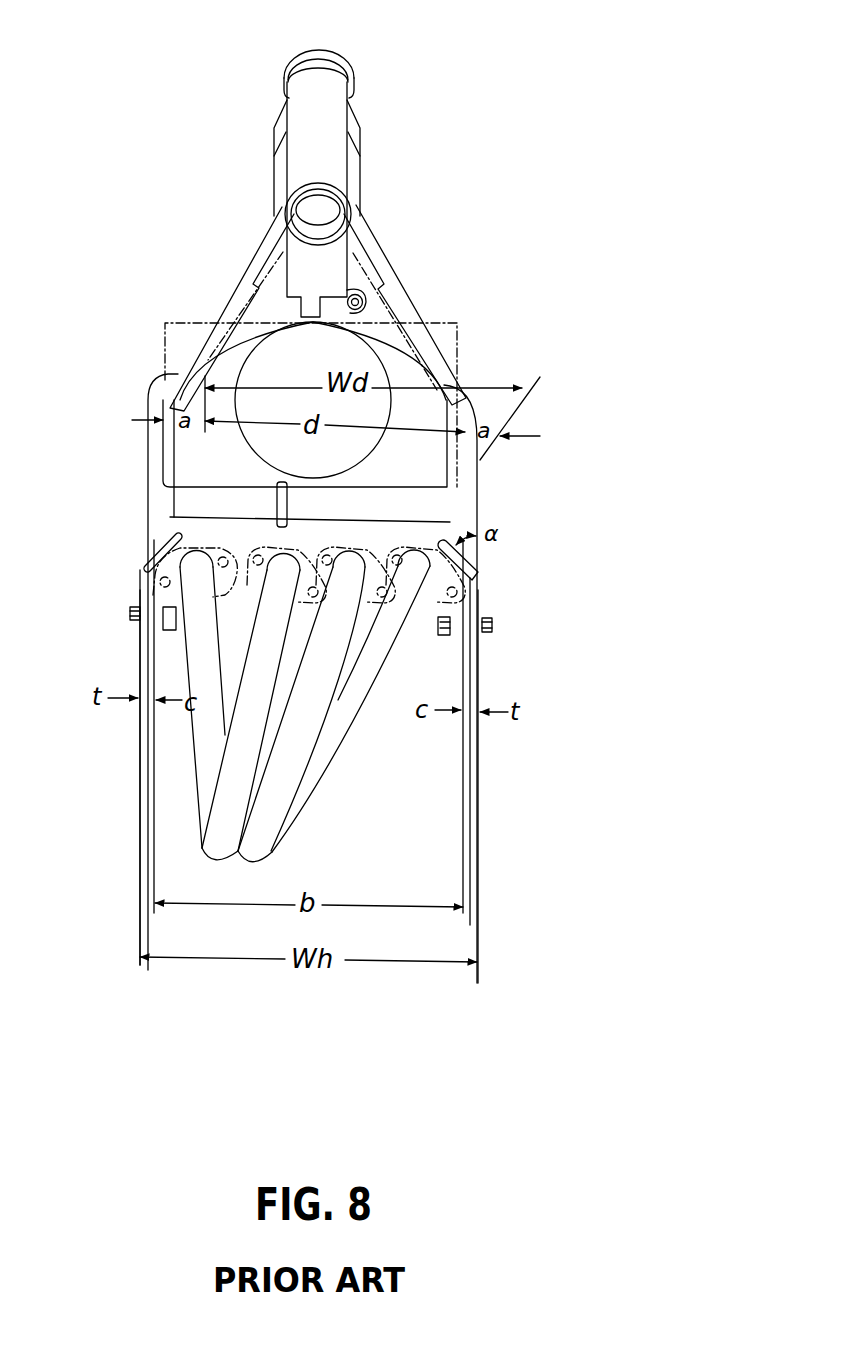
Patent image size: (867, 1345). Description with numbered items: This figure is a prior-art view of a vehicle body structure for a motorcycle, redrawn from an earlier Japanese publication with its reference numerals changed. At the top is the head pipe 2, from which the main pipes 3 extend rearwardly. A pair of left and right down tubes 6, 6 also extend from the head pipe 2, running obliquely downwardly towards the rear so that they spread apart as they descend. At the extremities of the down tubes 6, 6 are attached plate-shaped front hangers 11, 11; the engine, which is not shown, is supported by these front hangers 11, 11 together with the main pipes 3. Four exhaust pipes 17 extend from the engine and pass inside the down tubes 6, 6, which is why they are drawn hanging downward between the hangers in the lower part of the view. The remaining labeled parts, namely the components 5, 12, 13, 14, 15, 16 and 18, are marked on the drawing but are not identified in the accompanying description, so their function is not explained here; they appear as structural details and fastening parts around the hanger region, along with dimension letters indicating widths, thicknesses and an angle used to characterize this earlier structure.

The head pipe 2 is at (337, 50).
The main pipes 3 is at (355, 114).
The pin 5 is at (362, 175).
The down tubes 6 is at (237, 277).
The front hangers 11 is at (127, 583).
The mounting plate 12 is at (190, 497).
The angle bracket 13 is at (157, 547).
The side plate 14 is at (140, 597).
The bolt 15 is at (484, 625).
The reinforcing plate 16 is at (143, 570).
The exhaust pipes 17 is at (190, 735).
The bolt 18 is at (153, 638).